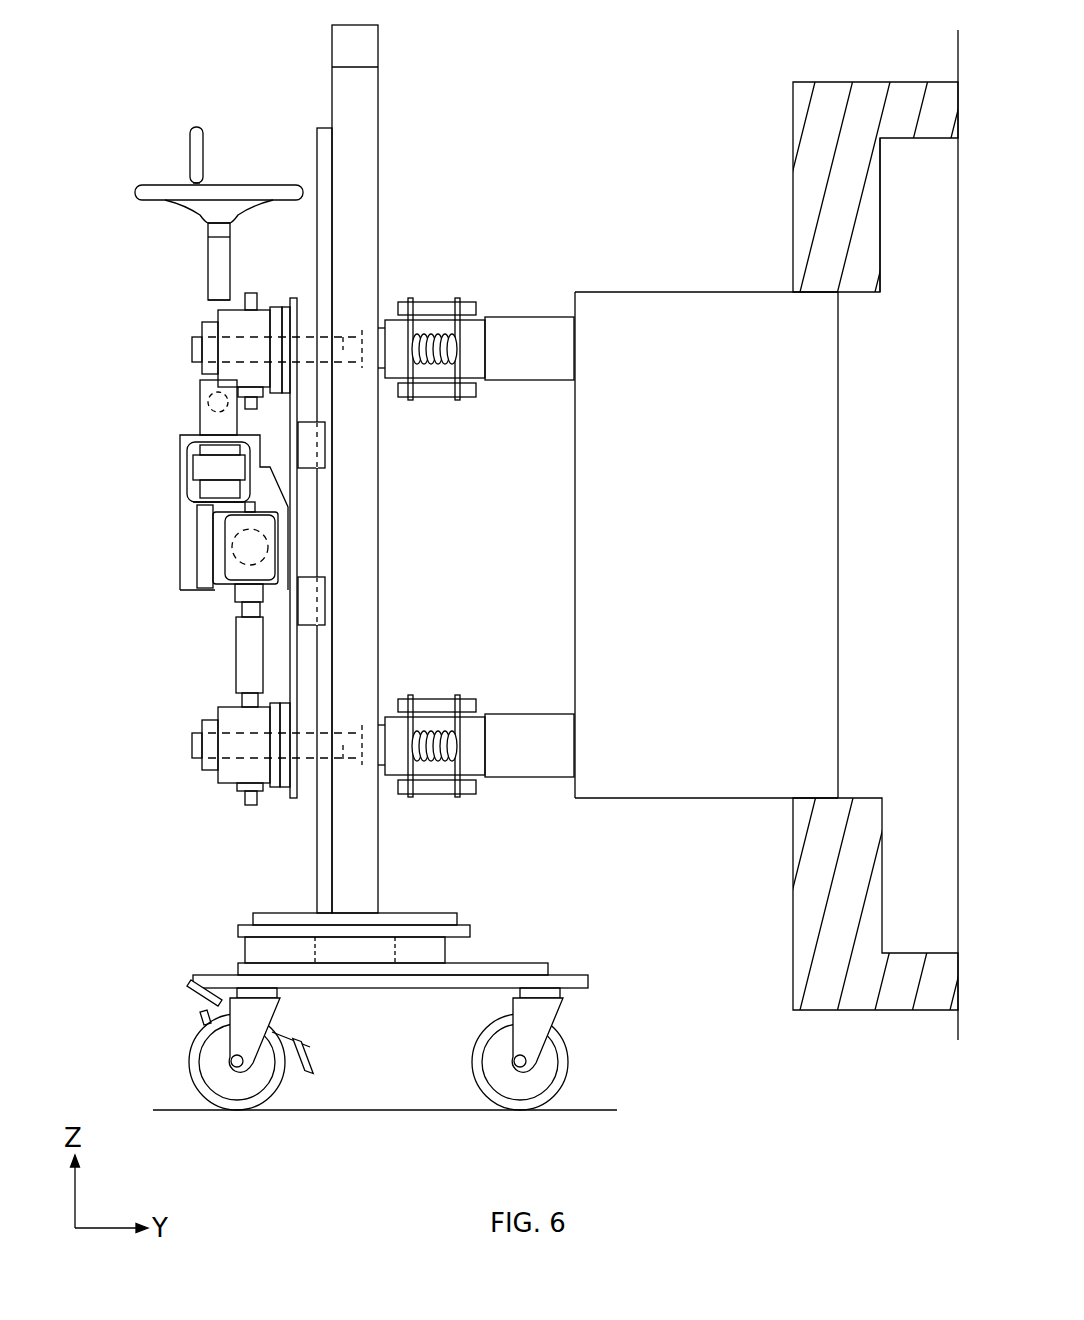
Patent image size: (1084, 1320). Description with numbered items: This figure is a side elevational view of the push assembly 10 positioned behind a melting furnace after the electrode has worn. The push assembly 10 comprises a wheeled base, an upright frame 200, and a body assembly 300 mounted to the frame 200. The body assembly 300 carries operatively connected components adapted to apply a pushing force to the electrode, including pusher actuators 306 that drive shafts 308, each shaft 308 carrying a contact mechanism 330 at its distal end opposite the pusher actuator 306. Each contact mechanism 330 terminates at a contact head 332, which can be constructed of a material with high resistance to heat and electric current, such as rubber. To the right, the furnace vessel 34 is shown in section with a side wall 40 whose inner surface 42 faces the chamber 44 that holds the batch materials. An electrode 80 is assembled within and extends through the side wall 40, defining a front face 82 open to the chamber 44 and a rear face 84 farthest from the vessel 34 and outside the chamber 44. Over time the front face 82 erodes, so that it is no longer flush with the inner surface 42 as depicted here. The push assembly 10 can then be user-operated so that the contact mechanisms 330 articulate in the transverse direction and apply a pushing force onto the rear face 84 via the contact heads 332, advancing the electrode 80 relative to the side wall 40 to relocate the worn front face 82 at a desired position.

The push assembly 10 is at (158, 52).
The frame 200 is at (408, 42).
The body assembly 300 is at (153, 579).
The pusher actuator 306 is at (228, 352).
The shaft 308 is at (343, 350).
The contact mechanism 330 is at (488, 289).
The contact head 332 is at (520, 352).
The electrode 80 is at (716, 328).
The front face 82 is at (840, 515).
The rear face 84 is at (574, 534).
The side wall 40 is at (877, 100).
The inner surface 42 is at (881, 186).
The chamber 44 is at (940, 180).
The vessel 34 is at (849, 1042).